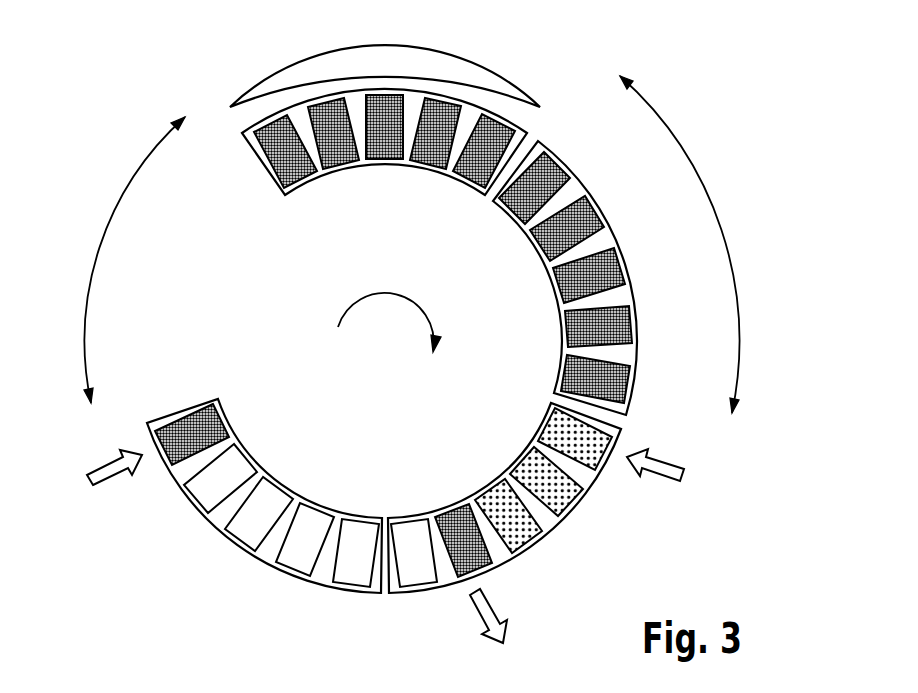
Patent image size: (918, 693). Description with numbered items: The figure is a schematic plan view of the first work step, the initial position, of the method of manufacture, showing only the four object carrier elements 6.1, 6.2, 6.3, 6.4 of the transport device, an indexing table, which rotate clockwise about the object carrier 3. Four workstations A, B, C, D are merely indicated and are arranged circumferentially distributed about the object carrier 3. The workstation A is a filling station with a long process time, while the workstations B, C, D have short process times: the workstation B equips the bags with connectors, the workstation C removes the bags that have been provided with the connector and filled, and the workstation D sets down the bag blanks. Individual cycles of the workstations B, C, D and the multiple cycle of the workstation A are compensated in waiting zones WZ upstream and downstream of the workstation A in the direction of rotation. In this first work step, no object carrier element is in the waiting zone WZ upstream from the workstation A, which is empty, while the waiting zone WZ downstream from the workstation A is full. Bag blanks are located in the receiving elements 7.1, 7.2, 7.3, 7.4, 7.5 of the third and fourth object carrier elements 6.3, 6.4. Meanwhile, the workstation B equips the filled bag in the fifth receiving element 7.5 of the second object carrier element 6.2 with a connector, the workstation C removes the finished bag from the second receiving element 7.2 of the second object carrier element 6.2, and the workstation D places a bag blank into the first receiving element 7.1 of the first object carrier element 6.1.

The object carrier 3 is at (427, 299).
The first object carrier element 6.1 is at (308, 489).
The second object carrier element 6.2 is at (494, 463).
The third object carrier element 6.3 is at (656, 288).
The fourth object carrier element 6.4 is at (385, 177).
The first receiving element 7.1 is at (470, 178).
The second receiving element 7.2 is at (430, 150).
The third receiving element 7.3 is at (386, 112).
The fourth receiving element 7.4 is at (340, 152).
The fifth receiving element 7.5 is at (286, 178).
The workstation A is at (385, 57).
The workstation B is at (667, 478).
The workstation C is at (495, 634).
The workstation D is at (104, 477).
The waiting zone WZ is at (105, 238).